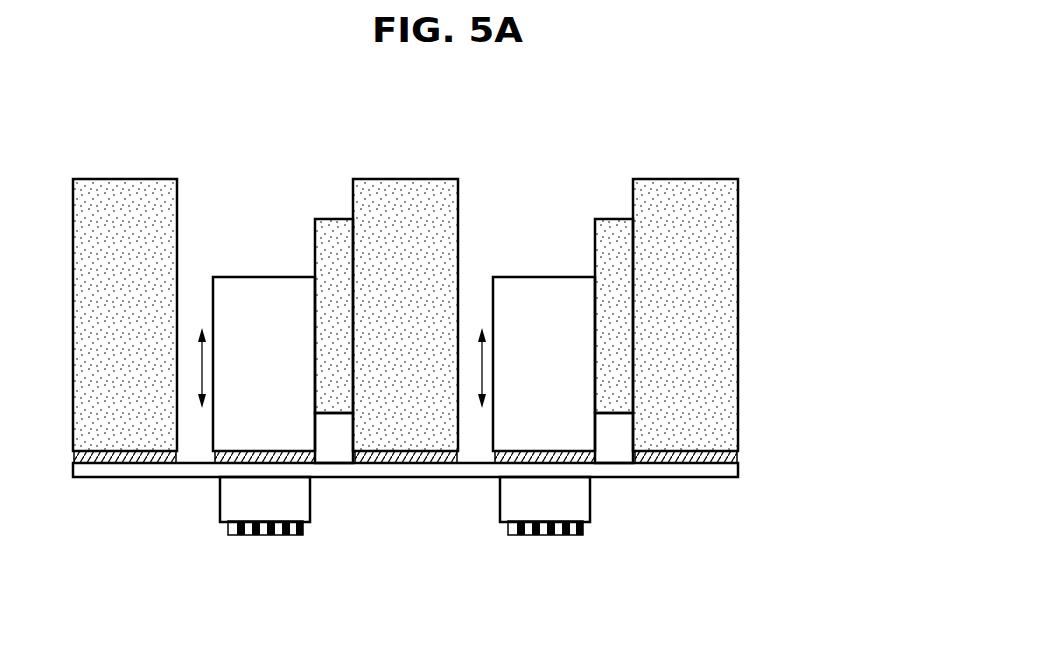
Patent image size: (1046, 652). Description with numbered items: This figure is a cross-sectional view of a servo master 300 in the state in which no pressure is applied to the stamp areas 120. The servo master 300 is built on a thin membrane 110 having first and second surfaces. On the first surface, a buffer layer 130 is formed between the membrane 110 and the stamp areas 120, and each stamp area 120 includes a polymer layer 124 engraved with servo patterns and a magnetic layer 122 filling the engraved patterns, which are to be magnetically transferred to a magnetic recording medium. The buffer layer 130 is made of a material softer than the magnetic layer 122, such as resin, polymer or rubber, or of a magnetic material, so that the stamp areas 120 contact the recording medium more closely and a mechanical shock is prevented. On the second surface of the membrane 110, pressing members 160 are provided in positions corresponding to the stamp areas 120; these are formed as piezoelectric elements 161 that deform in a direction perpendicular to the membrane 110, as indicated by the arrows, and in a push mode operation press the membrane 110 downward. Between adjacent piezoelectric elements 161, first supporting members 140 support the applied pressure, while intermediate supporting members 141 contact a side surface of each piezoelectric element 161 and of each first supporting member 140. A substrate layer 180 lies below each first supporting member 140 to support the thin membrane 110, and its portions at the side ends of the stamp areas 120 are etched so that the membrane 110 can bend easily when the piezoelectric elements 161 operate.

The servo master 300 is at (776, 183).
The membrane 110 is at (737, 470).
The stamp areas 120 is at (292, 600).
The magnetic layer 122 is at (243, 537).
The polymer layer 124 is at (232, 537).
The buffer layer 130 is at (225, 502).
The first supporting members 140 is at (678, 188).
The intermediate supporting members 141 is at (617, 223).
The pressing members 160 is at (514, 232).
The piezoelectric elements 161 is at (546, 284).
The substrate layer 180 is at (737, 458).